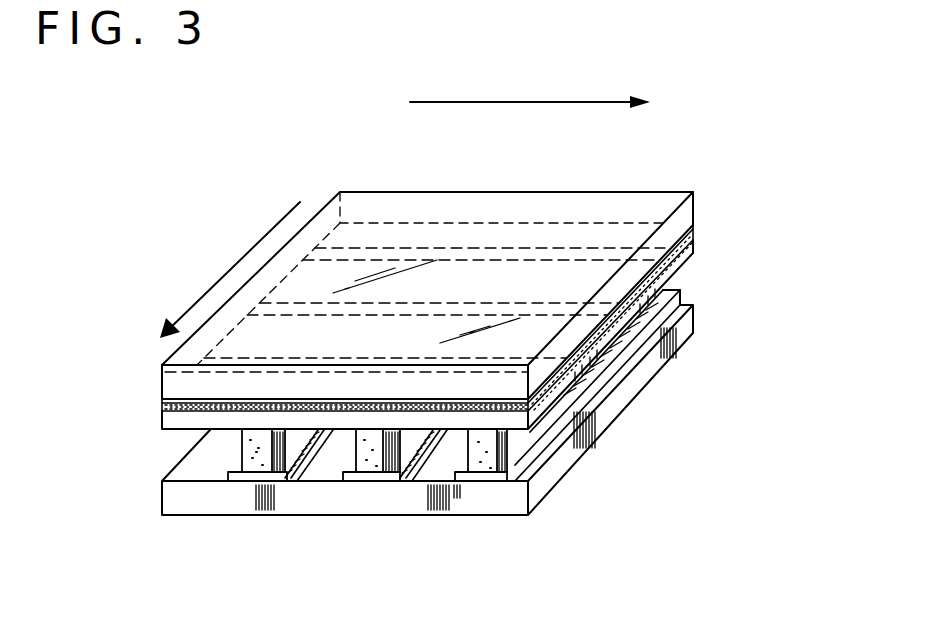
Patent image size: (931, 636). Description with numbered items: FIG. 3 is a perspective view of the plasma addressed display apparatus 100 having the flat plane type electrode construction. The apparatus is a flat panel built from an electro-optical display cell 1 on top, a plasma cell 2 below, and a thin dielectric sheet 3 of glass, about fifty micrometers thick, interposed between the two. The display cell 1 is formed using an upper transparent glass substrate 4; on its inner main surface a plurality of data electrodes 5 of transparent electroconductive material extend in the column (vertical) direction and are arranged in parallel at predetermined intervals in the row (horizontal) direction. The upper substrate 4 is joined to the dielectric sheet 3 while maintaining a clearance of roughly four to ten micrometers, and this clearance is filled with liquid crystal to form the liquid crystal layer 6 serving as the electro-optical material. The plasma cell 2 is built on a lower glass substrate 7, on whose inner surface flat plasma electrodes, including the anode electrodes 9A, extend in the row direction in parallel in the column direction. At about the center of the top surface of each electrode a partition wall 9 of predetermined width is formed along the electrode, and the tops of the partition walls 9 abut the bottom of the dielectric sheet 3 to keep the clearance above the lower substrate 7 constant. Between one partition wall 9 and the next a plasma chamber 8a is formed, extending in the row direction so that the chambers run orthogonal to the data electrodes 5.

The plasma addressed display apparatus 100 is at (351, 100).
The electro-optical display cell 1 is at (728, 206).
The plasma cell 2 is at (712, 322).
The dielectric sheet 3 is at (695, 247).
The upper transparent glass substrate 4 is at (382, 215).
The data electrodes 5 is at (673, 248).
The liquid crystal layer 6 is at (695, 230).
The lower glass substrate 7 is at (560, 466).
The plasma chamber 8a is at (317, 468).
The partition wall 9 is at (245, 443).
The anode electrodes 9A is at (260, 478).